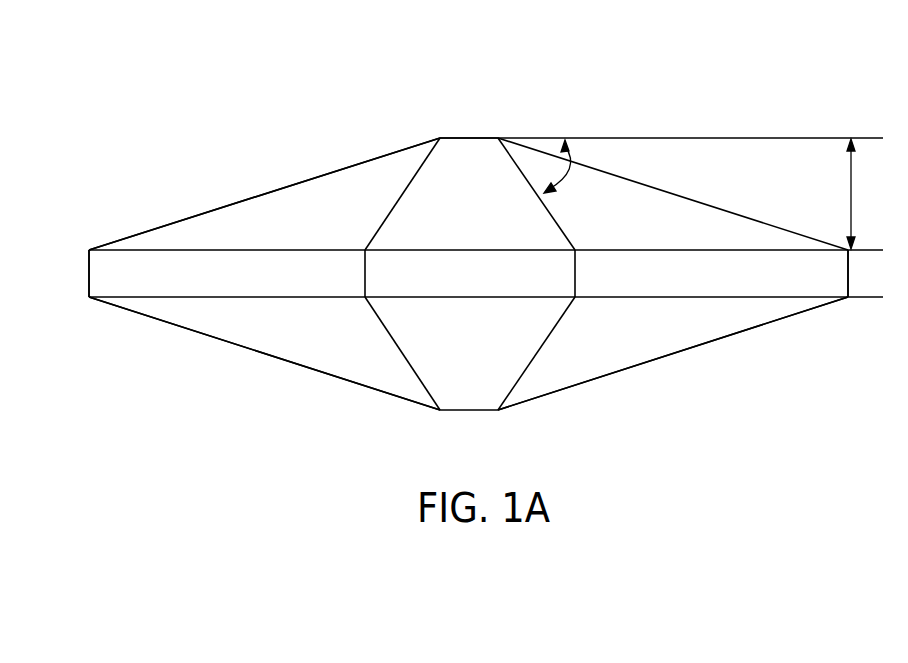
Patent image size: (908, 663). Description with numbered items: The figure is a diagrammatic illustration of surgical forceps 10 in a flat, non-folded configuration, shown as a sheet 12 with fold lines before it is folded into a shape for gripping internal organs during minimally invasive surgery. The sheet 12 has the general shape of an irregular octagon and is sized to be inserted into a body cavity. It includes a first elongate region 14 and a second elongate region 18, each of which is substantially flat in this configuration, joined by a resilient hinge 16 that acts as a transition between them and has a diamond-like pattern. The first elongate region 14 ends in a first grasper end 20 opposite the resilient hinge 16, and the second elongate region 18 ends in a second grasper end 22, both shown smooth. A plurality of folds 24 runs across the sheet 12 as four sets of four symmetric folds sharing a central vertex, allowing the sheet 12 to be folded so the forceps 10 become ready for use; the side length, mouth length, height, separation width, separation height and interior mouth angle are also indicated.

The surgical forceps 10 is at (250, 152).
The sheet 12 is at (347, 195).
The first elongate region 14 is at (252, 350).
The resilient hinge 16 is at (470, 160).
The second elongate region 18 is at (703, 345).
The first grasper end 20 is at (98, 264).
The second grasper end 22 is at (838, 264).
The plurality of folds 24 is at (278, 248).